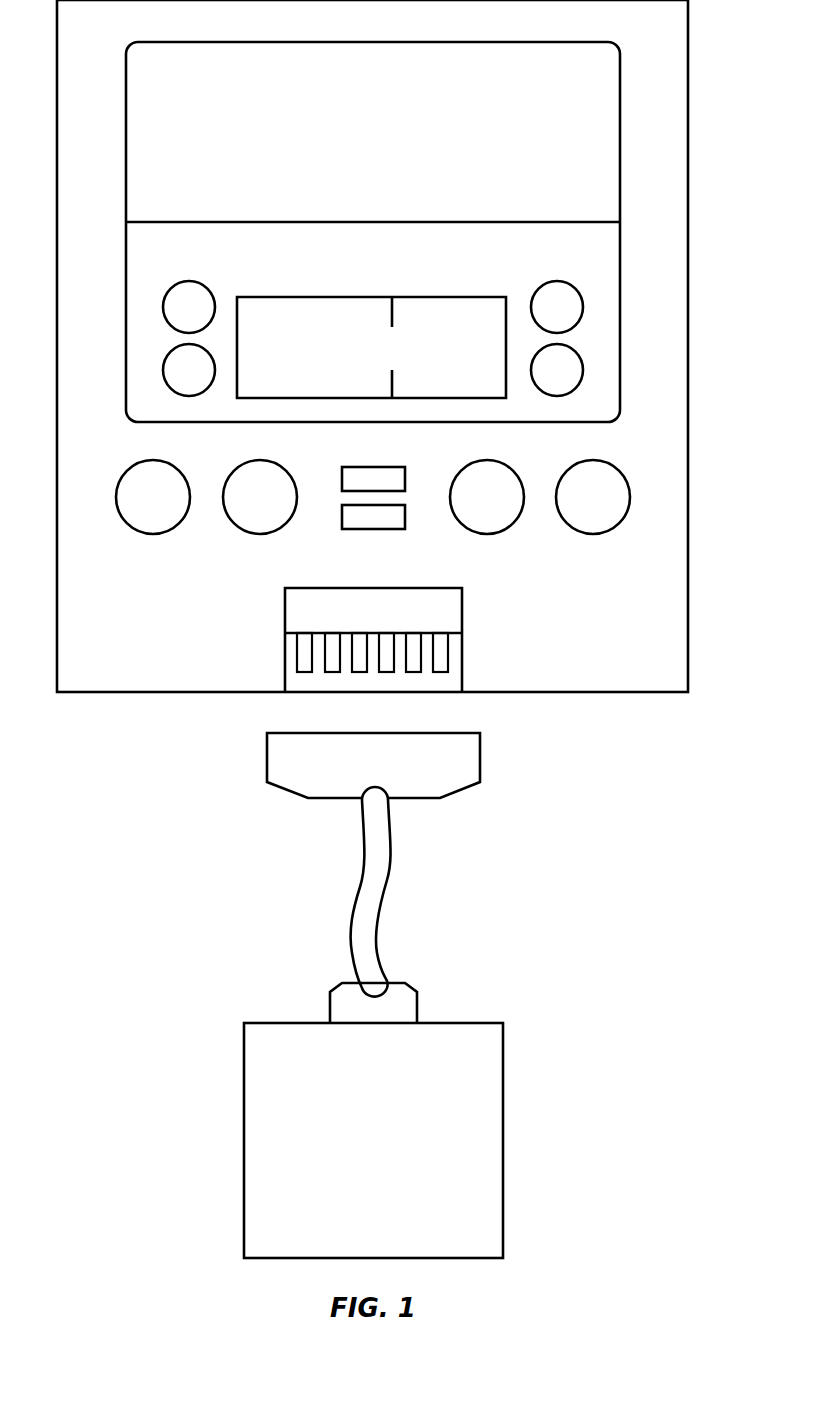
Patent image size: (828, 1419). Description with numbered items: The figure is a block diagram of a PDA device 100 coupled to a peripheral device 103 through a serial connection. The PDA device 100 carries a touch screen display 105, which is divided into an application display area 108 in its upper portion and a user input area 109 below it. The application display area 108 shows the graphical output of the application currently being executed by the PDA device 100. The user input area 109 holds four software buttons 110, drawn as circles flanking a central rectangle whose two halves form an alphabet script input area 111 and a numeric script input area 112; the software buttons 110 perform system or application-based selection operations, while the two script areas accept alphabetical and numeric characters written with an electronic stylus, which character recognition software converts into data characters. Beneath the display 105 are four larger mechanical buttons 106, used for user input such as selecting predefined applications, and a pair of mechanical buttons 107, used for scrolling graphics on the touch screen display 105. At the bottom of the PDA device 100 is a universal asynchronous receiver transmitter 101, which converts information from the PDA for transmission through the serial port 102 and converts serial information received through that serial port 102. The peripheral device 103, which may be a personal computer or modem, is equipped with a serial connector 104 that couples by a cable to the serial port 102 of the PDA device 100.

The PDA device 100 is at (372, 346).
The universal asynchronous receiver transmitter (UART) 101 is at (373, 640).
The serial port 102 is at (295, 663).
The peripheral device 103 is at (373, 1140).
The serial connector 104 is at (480, 783).
The touch screen display 105 is at (620, 157).
The mechanical buttons 106 is at (153, 534).
The mechanical buttons 107 is at (408, 460).
The application display area 108 is at (153, 55).
The user input area 109 is at (588, 255).
The software buttons 110 is at (163, 310).
The alphabet script input area 111 is at (308, 295).
The numeric script input area 112 is at (428, 295).